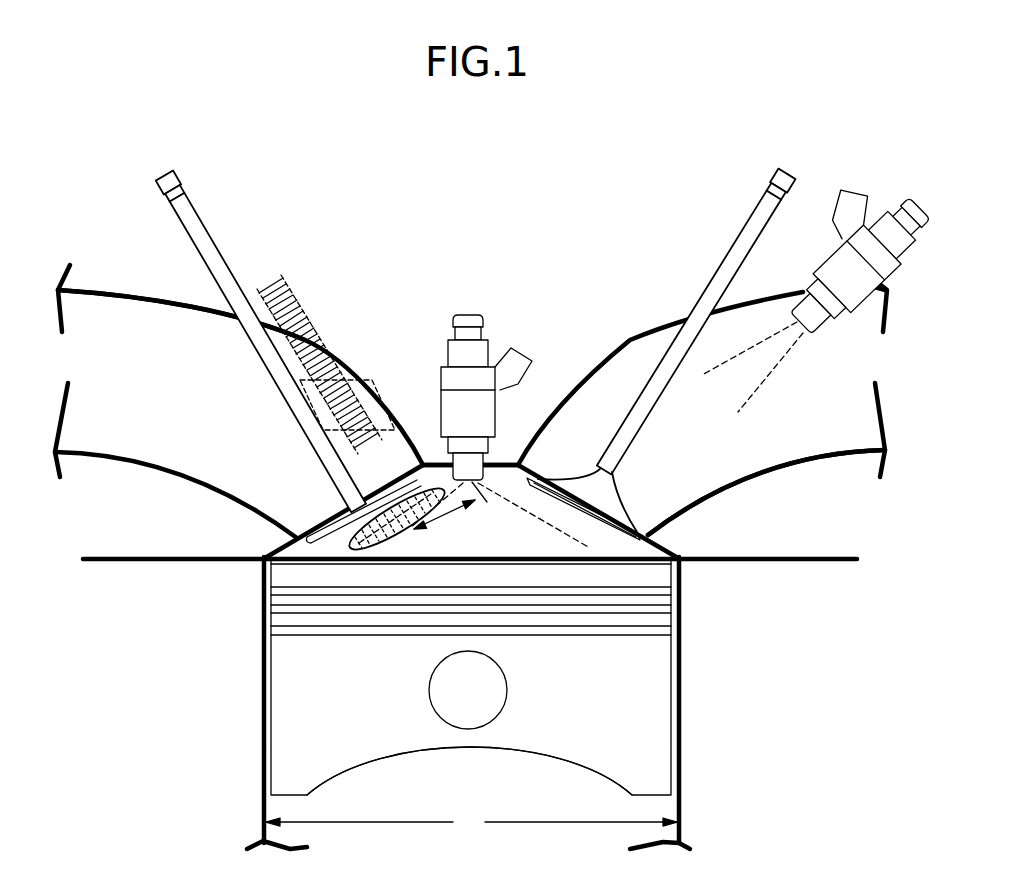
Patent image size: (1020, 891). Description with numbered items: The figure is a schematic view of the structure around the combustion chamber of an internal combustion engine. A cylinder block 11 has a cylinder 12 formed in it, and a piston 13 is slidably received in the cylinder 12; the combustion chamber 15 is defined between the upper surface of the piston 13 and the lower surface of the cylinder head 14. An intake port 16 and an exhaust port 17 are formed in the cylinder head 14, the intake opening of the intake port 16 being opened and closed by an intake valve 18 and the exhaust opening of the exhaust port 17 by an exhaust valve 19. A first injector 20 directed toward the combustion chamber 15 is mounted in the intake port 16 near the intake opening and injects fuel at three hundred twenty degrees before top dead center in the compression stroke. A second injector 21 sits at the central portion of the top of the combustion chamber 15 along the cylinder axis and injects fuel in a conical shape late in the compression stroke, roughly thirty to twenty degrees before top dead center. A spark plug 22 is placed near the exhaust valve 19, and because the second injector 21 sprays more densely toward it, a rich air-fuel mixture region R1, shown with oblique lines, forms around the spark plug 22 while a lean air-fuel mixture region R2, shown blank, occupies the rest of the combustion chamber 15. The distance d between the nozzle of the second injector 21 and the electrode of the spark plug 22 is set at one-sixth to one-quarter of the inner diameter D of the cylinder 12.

The cylinder block 11 is at (788, 635).
The cylinder 12 is at (677, 662).
The piston 13 is at (418, 738).
The cylinder head 14 is at (788, 535).
The combustion chamber 15 is at (525, 549).
The intake port 16 is at (790, 455).
The exhaust port 17 is at (207, 475).
The intake valve 18 is at (603, 470).
The exhaust valve 19 is at (342, 490).
The first injector 20 is at (824, 268).
The second injector 21 is at (465, 415).
The spark plug 22 is at (317, 332).
The rich air-fuel mixture region R1 is at (389, 550).
The lean air-fuel mixture region R2 is at (538, 548).
The inner diameter of the cylinder D is at (471, 822).
The distance between fuel injection nozzle and spark plug electrode d is at (444, 519).